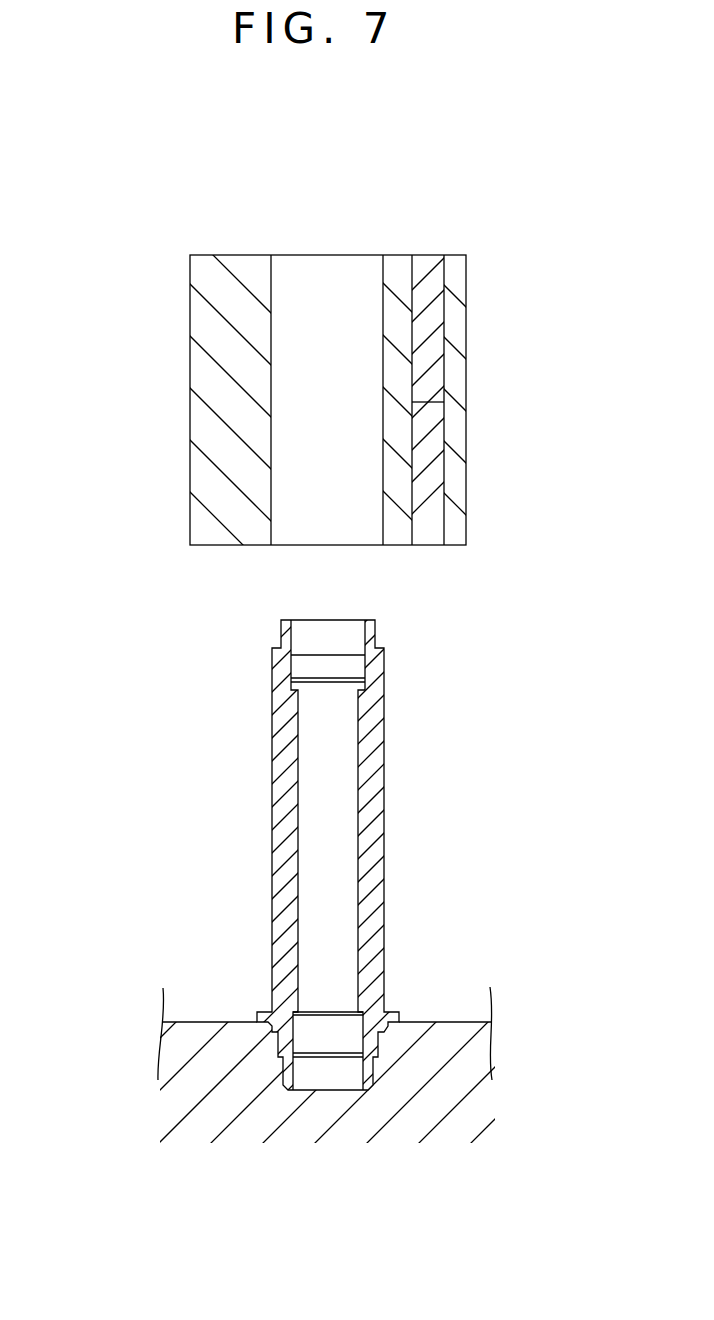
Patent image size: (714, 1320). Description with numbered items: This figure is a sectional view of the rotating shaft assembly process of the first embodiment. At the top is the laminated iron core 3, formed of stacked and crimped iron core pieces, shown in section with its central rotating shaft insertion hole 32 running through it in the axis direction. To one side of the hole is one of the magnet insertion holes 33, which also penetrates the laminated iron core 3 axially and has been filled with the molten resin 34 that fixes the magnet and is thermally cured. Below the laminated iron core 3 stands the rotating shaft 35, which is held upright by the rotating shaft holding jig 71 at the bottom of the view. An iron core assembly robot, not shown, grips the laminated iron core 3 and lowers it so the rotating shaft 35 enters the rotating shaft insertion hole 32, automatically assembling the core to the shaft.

The laminated iron core 3 is at (218, 383).
The rotating shaft insertion hole 32 is at (327, 318).
The magnet insertion hole 33 is at (447, 333).
The molten resin 34 is at (423, 273).
The rotating shaft 35 is at (370, 783).
The rotating shaft holding jig 71 is at (205, 1032).